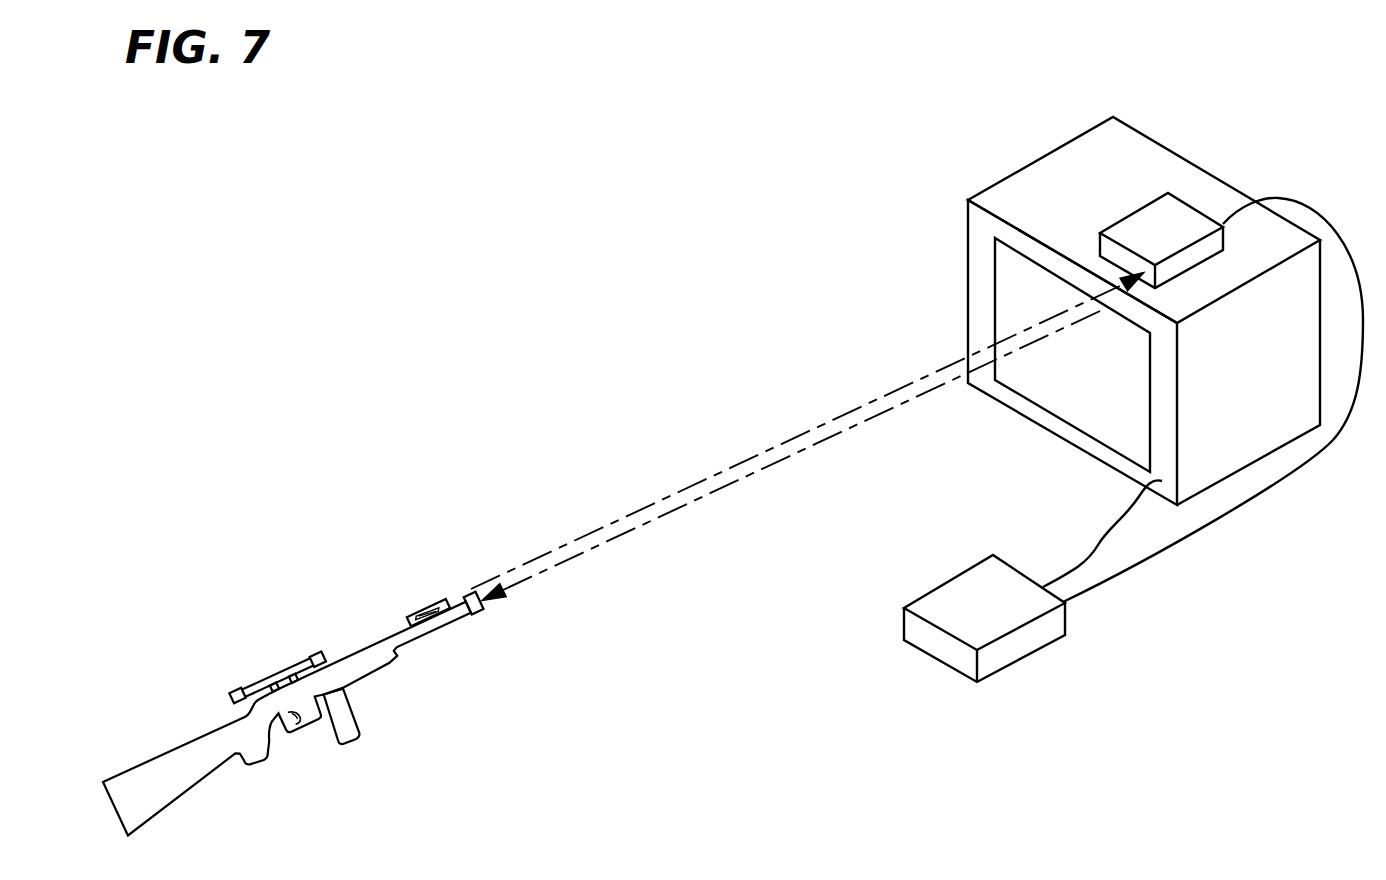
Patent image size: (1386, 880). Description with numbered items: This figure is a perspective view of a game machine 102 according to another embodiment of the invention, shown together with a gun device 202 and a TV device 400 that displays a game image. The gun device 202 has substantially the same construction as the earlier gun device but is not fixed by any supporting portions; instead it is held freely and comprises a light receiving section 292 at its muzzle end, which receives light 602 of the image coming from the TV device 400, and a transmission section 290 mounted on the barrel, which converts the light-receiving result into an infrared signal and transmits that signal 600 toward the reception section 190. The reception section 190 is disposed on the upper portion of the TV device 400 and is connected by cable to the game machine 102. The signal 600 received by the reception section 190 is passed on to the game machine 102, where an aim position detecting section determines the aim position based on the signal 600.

The TV device 400 is at (1047, 152).
The reception section 190 is at (1173, 217).
The game machine 102 is at (1020, 647).
The signal 600 is at (748, 458).
The light 602 is at (746, 474).
The gun device 202 is at (358, 570).
The transmission section 290 is at (427, 607).
The light receiving section 292 is at (486, 606).